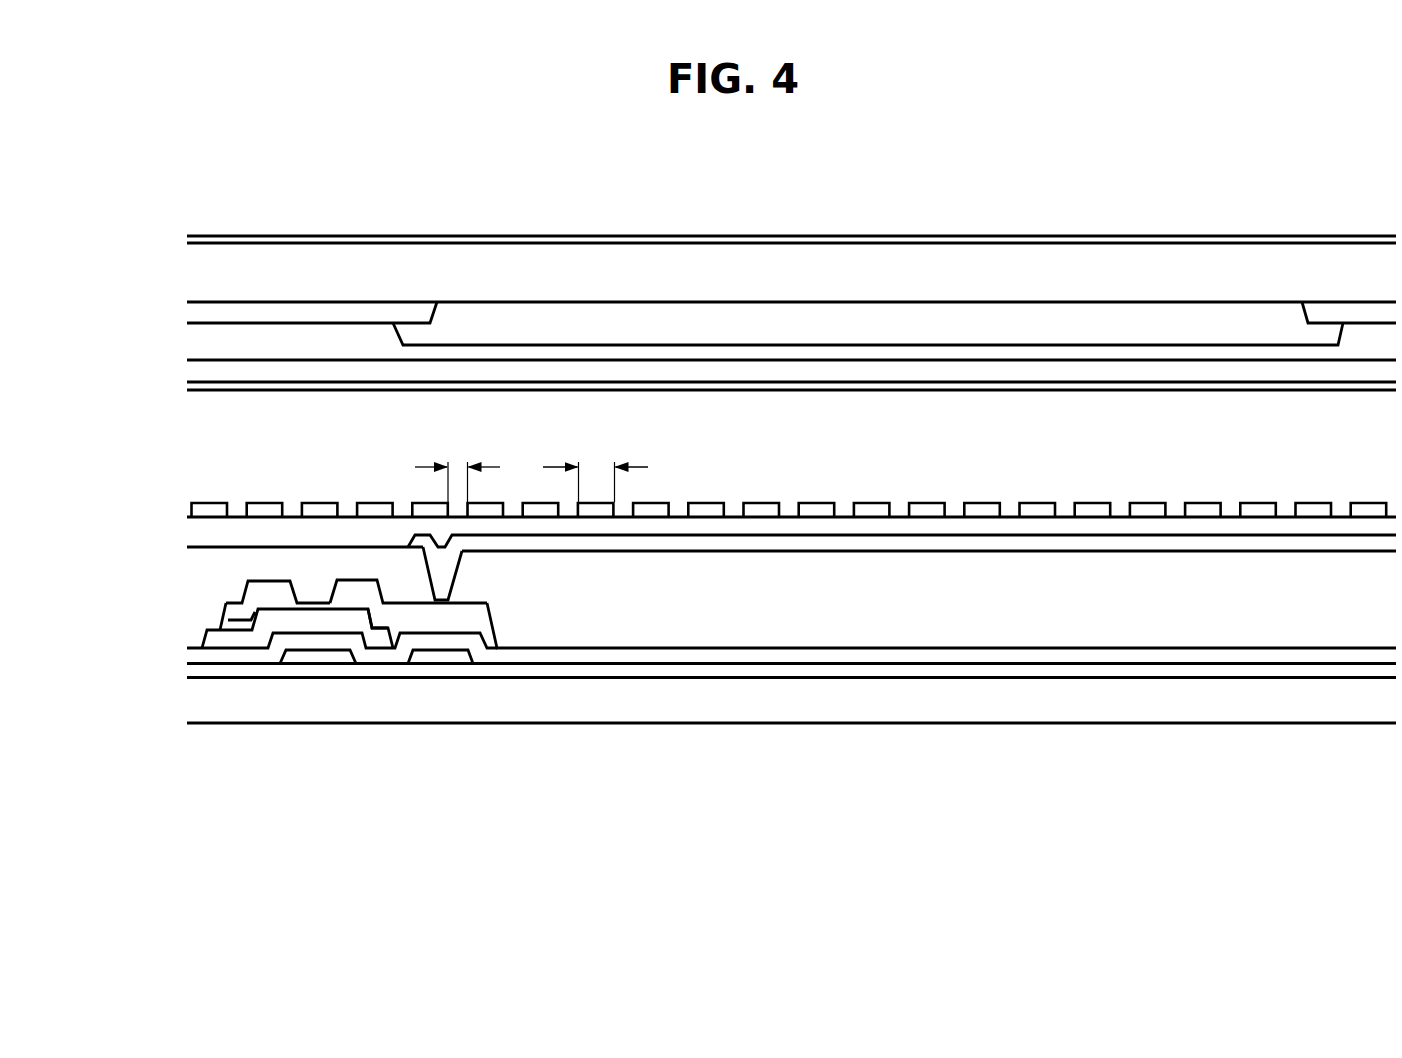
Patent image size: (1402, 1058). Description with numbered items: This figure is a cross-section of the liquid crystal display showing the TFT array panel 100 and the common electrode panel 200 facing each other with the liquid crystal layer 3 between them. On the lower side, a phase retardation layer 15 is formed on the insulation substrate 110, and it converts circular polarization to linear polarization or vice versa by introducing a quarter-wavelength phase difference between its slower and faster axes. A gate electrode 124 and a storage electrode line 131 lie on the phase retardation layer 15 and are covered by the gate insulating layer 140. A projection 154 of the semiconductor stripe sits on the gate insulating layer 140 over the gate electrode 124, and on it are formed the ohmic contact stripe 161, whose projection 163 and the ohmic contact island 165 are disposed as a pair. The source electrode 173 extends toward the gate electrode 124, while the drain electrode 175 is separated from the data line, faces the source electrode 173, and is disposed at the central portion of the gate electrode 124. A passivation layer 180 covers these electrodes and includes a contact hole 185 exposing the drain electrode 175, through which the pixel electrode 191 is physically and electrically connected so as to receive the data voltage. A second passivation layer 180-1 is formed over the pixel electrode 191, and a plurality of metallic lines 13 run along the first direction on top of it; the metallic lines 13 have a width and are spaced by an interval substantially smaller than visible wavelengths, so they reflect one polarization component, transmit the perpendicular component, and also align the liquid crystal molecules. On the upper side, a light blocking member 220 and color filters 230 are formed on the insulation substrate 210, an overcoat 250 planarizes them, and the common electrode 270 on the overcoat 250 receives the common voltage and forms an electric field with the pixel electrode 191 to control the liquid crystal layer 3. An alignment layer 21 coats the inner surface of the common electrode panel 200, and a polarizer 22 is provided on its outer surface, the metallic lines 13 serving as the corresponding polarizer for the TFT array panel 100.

The common electrode panel 200 is at (143, 278).
The insulation substrate 210 is at (758, 262).
The polarizer 22 is at (912, 242).
The light blocking member 220 is at (393, 300).
The color filter 230 is at (582, 306).
The overcoat 250 is at (510, 355).
The common electrode 270 is at (655, 368).
The alignment layer 21 is at (1105, 387).
The TFT array panel 100 is at (143, 630).
The liquid crystal layer 3 is at (240, 453).
The metallic lines 13 is at (200, 507).
The second passivation layer 180-1 is at (205, 527).
The pixel electrode 191 is at (597, 540).
The contact hole 185 is at (448, 566).
The passivation layer 180 is at (640, 636).
The gate insulating layer 140 is at (770, 656).
The phase retardation layer 15 is at (195, 677).
The insulation substrate 110 is at (690, 713).
The gate electrode 124 is at (331, 657).
The storage electrode line 131 is at (425, 658).
The projection 154 is at (320, 625).
The ohmic contact stripe 161 is at (228, 625).
The projection 163 is at (243, 617).
The source electrode 173 is at (242, 615).
The ohmic contact island 165 is at (380, 628).
The drain electrode 175 is at (453, 617).